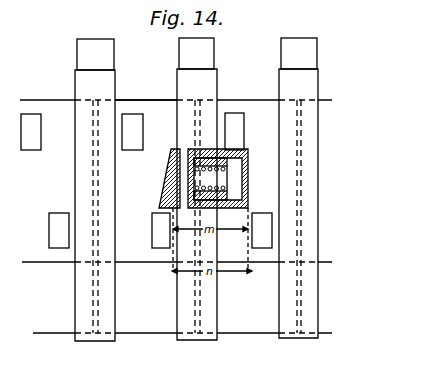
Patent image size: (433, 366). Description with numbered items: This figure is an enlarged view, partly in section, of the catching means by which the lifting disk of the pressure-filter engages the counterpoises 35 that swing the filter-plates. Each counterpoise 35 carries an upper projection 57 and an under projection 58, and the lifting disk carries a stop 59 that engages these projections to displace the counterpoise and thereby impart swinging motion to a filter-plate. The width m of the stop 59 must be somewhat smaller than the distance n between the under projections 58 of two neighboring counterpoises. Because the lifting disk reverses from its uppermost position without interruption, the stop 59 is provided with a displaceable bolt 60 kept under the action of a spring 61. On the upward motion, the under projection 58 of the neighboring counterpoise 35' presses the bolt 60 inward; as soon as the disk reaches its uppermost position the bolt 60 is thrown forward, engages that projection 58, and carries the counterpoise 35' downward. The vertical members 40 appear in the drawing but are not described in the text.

The counterpoise 35 is at (176, 208).
The neighboring counterpoise 35' is at (146, 92).
The column member 40 is at (115, 77).
The upper projection 57 is at (41, 130).
The under projection 58 is at (49, 236).
The stop 59 is at (241, 188).
The displaceable bolt 60 is at (171, 177).
The spring 61 is at (241, 167).